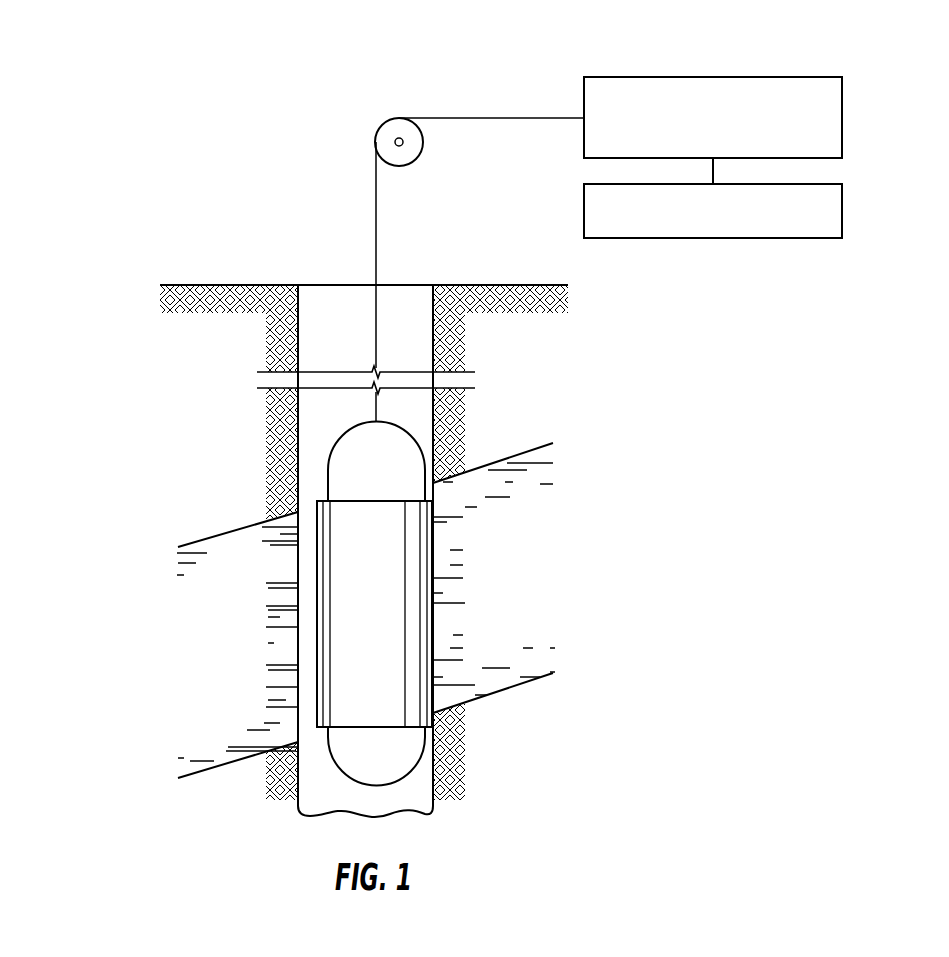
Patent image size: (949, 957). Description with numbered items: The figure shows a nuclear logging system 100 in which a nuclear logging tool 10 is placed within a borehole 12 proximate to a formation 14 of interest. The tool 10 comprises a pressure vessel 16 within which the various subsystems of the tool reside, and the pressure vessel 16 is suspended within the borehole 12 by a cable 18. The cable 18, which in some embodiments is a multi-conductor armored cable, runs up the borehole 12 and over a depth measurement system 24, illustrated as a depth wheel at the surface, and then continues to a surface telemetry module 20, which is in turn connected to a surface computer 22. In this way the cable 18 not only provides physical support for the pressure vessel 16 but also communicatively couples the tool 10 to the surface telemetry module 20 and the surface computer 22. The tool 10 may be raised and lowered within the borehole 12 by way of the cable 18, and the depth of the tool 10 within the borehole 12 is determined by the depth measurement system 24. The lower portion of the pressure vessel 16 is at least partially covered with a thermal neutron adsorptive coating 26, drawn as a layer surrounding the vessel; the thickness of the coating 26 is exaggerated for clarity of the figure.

The nuclear logging system 100 is at (253, 165).
The nuclear logging tool 10 is at (318, 444).
The borehole 12 is at (349, 327).
The formation 14 is at (520, 579).
The pressure vessel 16 is at (388, 478).
The cable 18 is at (376, 225).
The surface telemetry module 20 is at (842, 108).
The surface computer 22 is at (842, 213).
The depth measurement system 24 is at (417, 158).
The thermal neutron adsorptive coating 26 is at (372, 716).